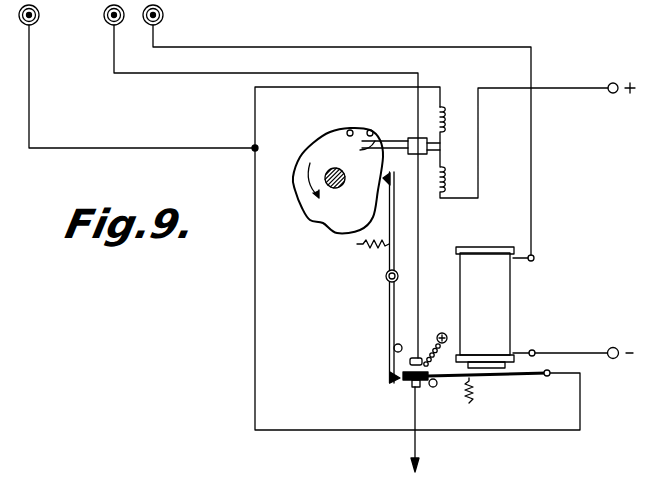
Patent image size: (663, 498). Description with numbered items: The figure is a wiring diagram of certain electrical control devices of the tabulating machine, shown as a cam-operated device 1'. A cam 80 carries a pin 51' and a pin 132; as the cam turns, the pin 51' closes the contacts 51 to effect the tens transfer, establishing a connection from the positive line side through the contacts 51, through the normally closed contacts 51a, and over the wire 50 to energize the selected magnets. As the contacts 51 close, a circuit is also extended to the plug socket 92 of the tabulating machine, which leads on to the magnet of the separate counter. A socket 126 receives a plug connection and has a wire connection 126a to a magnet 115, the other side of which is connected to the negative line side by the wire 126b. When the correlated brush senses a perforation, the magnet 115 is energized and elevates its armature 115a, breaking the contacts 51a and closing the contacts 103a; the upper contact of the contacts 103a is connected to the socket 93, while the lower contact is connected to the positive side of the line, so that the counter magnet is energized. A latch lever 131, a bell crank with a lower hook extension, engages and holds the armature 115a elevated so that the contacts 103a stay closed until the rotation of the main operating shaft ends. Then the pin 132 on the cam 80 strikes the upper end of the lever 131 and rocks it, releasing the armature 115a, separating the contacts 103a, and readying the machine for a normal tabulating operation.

The plug socket 92 is at (39, 13).
The socket 93 is at (124, 13).
The socket 126 is at (163, 13).
The pin 51' is at (367, 115).
The pin 132 is at (400, 133).
The contacts 51 is at (347, 178).
The cam device 1' is at (296, 193).
The cam 80 is at (307, 215).
The latch lever 131 is at (392, 310).
The contacts 103a is at (418, 358).
The magnet 115 is at (503, 320).
The wire connection 126a is at (540, 245).
The wire 126b is at (557, 348).
The contacts 51a is at (420, 384).
The armature 115a is at (490, 377).
The wire 50 is at (417, 447).